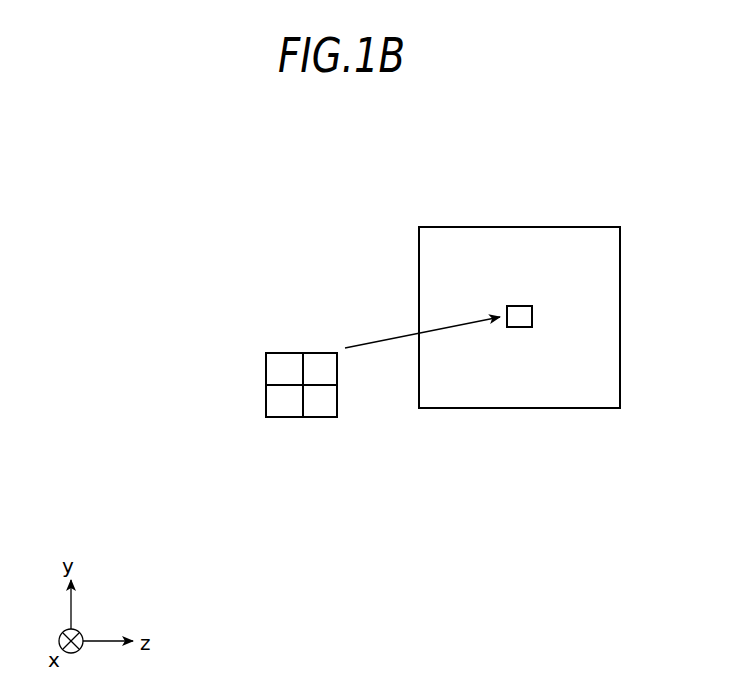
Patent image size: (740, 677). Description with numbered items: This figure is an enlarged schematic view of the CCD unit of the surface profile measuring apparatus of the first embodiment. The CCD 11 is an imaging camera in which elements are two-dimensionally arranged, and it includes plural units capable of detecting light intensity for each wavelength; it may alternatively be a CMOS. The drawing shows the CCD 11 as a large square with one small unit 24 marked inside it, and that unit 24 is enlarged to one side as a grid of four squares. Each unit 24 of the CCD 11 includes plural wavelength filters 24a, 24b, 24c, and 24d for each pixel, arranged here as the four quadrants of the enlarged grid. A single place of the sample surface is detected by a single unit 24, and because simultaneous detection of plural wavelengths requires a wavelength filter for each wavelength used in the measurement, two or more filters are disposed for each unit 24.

The CCD 11 is at (508, 408).
The unit 24 is at (517, 305).
The wavelength filter 24a is at (278, 400).
The wavelength filter 24b is at (278, 370).
The wavelength filter 24c is at (327, 368).
The wavelength filter 24d is at (327, 397).